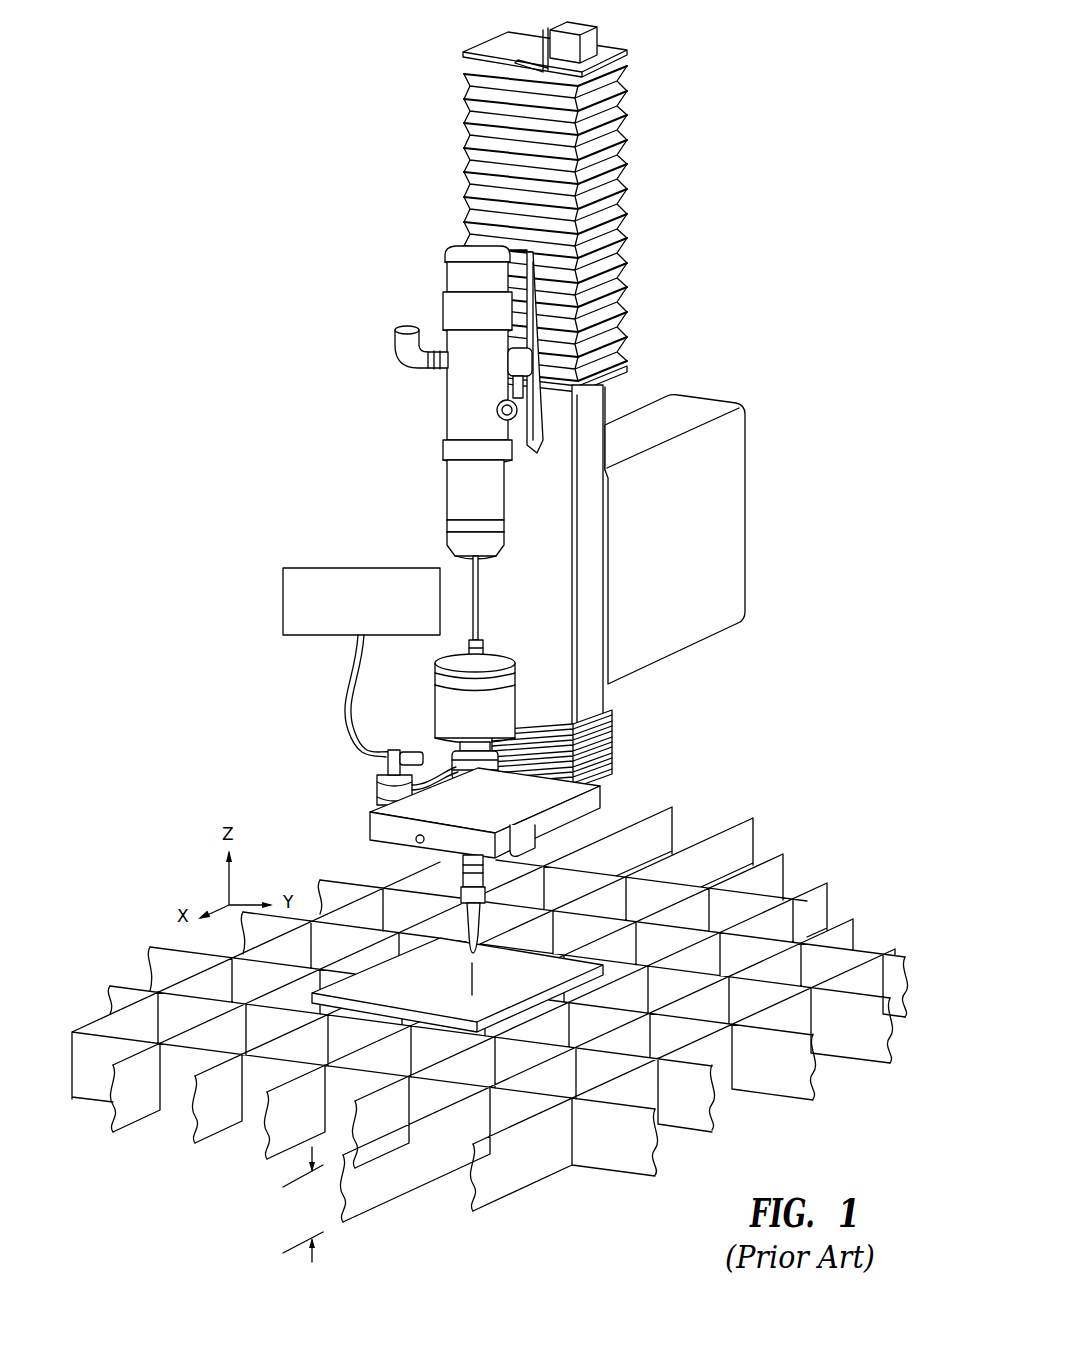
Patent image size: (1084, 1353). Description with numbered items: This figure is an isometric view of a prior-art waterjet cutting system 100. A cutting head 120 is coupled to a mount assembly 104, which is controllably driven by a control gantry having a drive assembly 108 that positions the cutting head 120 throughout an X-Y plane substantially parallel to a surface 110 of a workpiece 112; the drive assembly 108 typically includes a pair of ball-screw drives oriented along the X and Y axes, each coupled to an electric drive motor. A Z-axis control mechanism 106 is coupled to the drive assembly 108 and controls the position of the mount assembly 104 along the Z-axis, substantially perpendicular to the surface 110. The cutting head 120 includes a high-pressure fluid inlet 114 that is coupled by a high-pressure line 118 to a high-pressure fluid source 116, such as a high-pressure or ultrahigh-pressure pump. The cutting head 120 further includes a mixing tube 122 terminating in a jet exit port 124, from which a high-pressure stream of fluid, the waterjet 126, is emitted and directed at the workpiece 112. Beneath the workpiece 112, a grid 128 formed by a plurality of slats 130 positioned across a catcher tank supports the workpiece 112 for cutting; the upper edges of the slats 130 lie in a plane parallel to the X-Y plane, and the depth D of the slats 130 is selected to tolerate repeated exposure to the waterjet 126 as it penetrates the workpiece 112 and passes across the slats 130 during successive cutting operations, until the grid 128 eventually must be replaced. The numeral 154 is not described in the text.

The waterjet cutting system 100 is at (318, 398).
The mount assembly 104 is at (377, 795).
The Z-axis control mechanism 106 is at (658, 352).
The drive assembly 108 is at (720, 447).
The surface 110 is at (440, 979).
The workpiece 112 is at (377, 975).
The high-pressure fluid inlet 114 is at (470, 818).
The high-pressure fluid source 116 is at (283, 582).
The high-pressure line 118 is at (350, 727).
The cutting head 120 is at (447, 872).
The mixing tube 122 is at (495, 908).
The jet exit port 124 is at (482, 957).
The waterjet 126 is at (474, 980).
The grid 128 is at (490, 1017).
The slats 130 is at (122, 993).
The Z-direction travel 154 is at (628, 800).